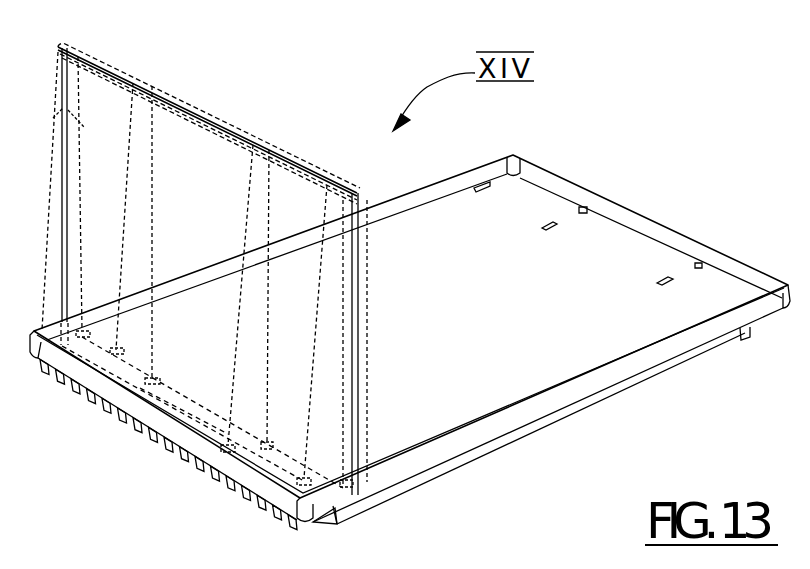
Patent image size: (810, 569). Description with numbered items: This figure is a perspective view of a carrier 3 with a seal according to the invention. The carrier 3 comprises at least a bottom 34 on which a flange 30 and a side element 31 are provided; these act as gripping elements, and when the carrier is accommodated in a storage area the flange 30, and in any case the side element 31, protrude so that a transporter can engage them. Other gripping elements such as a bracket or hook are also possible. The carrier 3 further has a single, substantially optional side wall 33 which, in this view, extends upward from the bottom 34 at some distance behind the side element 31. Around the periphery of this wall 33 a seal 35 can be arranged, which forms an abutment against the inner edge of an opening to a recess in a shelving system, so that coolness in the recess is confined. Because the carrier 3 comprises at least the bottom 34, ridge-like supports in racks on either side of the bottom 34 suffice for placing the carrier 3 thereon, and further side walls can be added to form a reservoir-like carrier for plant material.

The carrier 3 is at (352, 108).
The flange 30 is at (308, 512).
The side element 31 is at (267, 506).
The side wall 33 is at (43, 127).
The bottom 34 is at (500, 392).
The seal 35 is at (137, 80).